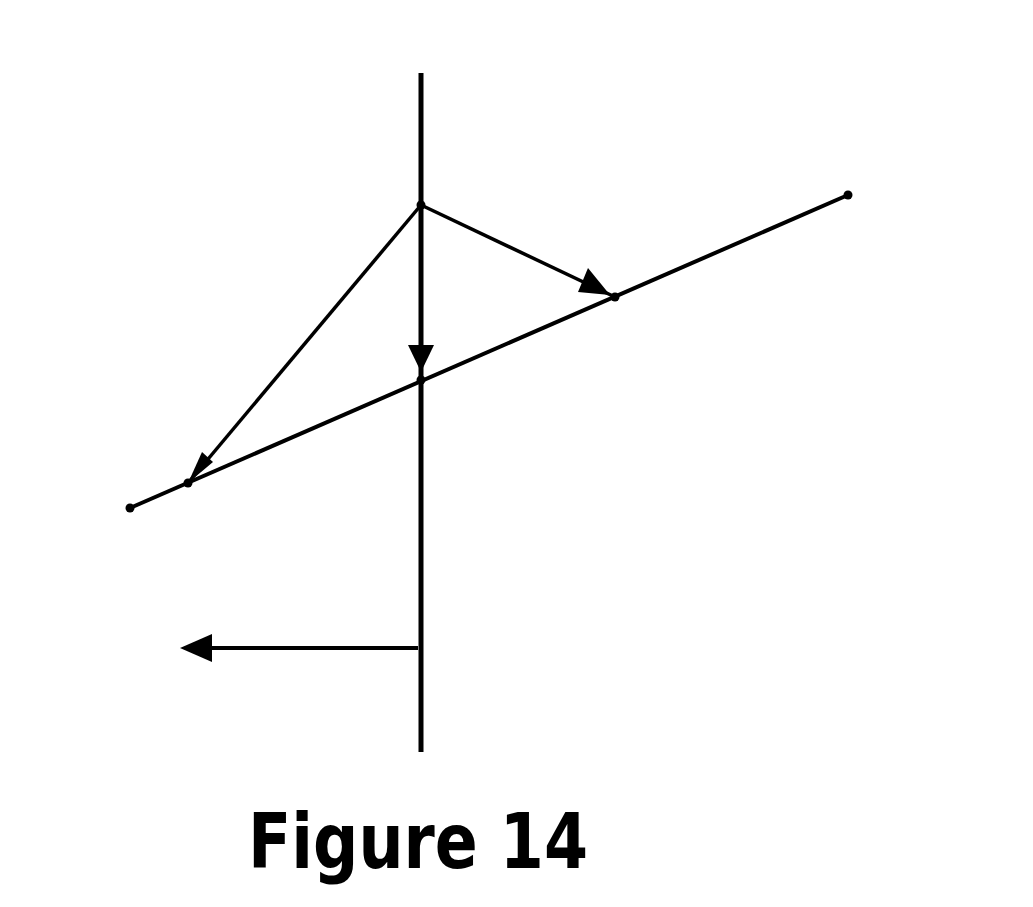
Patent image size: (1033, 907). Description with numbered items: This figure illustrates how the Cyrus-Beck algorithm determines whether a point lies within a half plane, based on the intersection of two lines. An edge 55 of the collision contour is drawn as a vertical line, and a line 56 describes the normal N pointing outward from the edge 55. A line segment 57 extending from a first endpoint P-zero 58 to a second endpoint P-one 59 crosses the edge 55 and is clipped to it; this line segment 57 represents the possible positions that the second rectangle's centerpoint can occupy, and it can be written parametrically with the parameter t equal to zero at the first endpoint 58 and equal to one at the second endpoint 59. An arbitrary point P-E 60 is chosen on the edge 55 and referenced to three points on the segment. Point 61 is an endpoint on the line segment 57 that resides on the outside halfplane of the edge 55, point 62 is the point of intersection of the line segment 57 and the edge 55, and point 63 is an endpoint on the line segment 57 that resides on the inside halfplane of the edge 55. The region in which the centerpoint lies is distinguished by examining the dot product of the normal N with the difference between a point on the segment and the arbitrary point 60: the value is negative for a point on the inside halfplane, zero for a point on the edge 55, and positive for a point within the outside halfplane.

The edge 55 is at (434, 101).
The line 56 is at (272, 656).
The line segment 57 is at (694, 270).
The P0 58 is at (125, 519).
The P1 59 is at (843, 187).
The arbitrary point P_E 60 is at (432, 202).
The point 61 is at (196, 497).
The point of intersection 62 is at (434, 390).
The point 63 is at (622, 309).